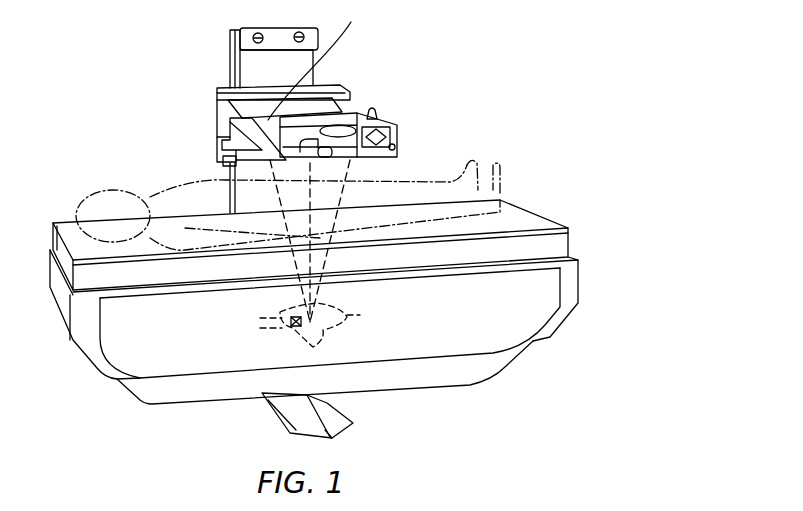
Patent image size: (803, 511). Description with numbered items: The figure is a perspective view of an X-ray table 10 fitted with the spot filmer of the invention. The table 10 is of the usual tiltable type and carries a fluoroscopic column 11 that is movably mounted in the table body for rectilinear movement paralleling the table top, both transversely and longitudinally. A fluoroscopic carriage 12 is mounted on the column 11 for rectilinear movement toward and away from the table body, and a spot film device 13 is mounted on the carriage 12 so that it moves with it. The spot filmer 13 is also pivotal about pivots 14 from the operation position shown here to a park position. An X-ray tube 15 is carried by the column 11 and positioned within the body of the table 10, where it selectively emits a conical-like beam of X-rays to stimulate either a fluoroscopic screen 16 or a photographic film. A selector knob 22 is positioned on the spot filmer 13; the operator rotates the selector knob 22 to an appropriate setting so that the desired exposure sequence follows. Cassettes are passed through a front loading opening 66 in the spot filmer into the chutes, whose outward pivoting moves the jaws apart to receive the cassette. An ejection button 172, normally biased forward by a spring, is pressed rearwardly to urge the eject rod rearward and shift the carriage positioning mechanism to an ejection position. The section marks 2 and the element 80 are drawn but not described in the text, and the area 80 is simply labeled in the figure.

The section line 2- 2 is at (377, 100).
The X-ray table 10 is at (88, 370).
The fluoroscopic column 11 is at (230, 58).
The fluoroscopic carriage 12 is at (339, 96).
The spot film device 13 is at (408, 122).
The pivots 14 is at (230, 138).
The X-ray tube 15 is at (323, 342).
The fluoroscopic screen 16 is at (318, 61).
The selector knob 22 is at (376, 118).
The front loading opening 66 is at (323, 152).
The latch 80 is at (312, 146).
The ejection button 172 is at (396, 148).